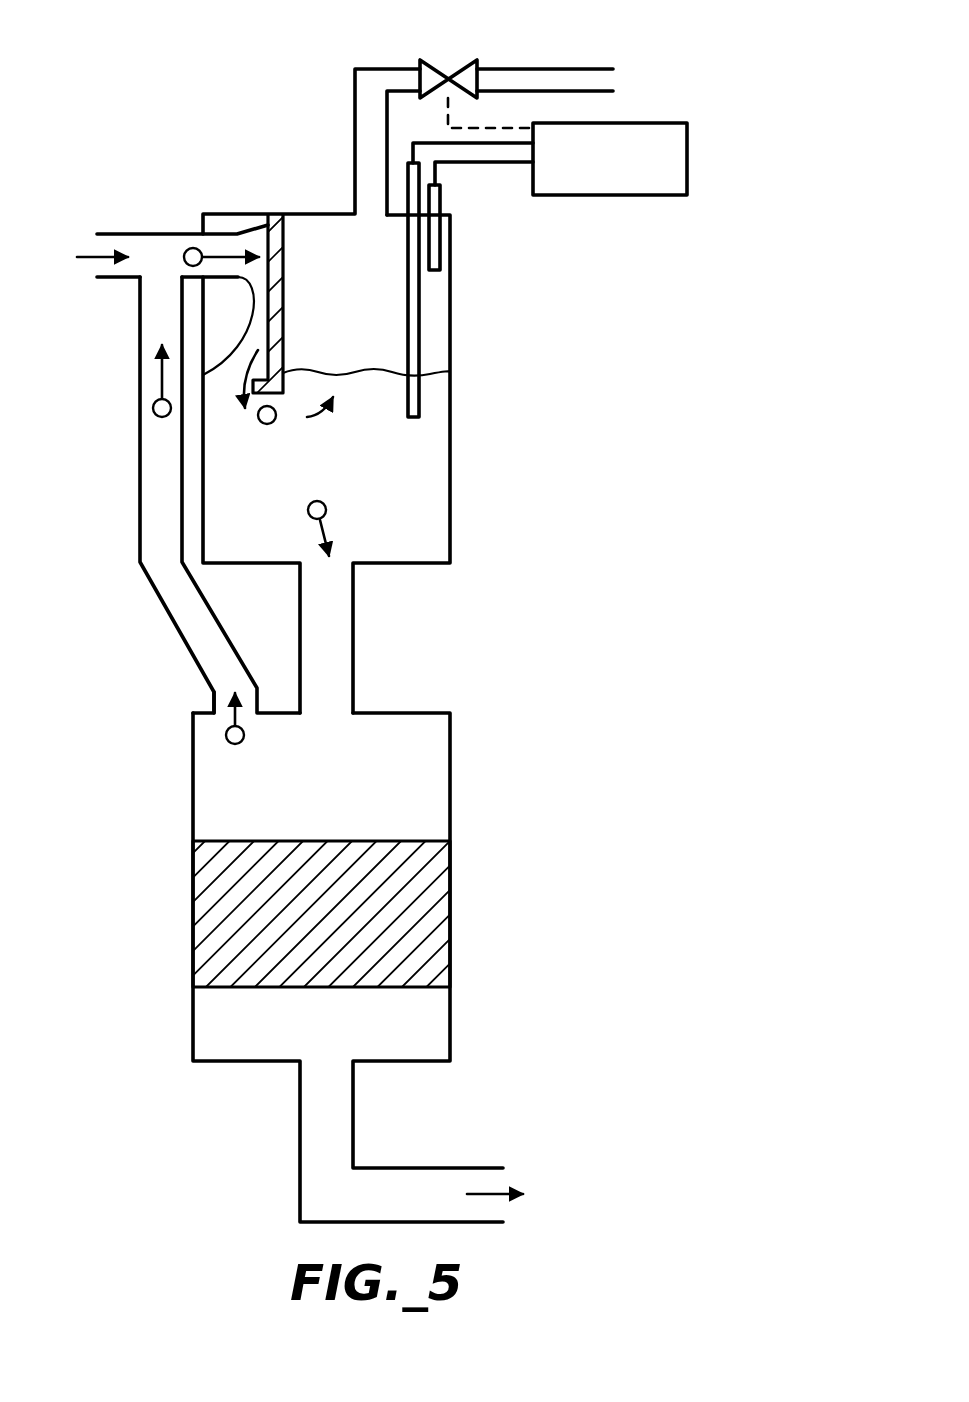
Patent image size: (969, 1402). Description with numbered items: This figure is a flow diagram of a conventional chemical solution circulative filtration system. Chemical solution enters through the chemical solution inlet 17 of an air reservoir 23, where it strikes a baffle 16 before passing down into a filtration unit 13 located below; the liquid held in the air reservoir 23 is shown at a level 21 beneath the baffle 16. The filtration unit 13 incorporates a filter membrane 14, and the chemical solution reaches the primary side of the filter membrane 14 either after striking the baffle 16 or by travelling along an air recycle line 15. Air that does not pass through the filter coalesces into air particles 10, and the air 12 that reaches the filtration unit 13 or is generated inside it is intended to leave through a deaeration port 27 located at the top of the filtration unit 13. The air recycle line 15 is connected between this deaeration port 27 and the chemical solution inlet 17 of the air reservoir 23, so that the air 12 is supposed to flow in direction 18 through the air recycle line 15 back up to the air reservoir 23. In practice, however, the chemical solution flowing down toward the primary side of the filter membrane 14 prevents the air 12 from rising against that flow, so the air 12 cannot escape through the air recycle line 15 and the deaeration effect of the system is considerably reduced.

The air particles 10 is at (193, 247).
The air 12 is at (226, 738).
The filtration unit 13 is at (450, 763).
The filter membrane 14 is at (435, 923).
The air recycle line 15 is at (157, 597).
The baffle 16 is at (287, 271).
The chemical solution inlet 17 is at (130, 233).
The direction 18 is at (157, 384).
The liquid level sensor electrodes 21 is at (430, 422).
The air reservoir 23 is at (450, 495).
The deaeration port 27 is at (212, 702).